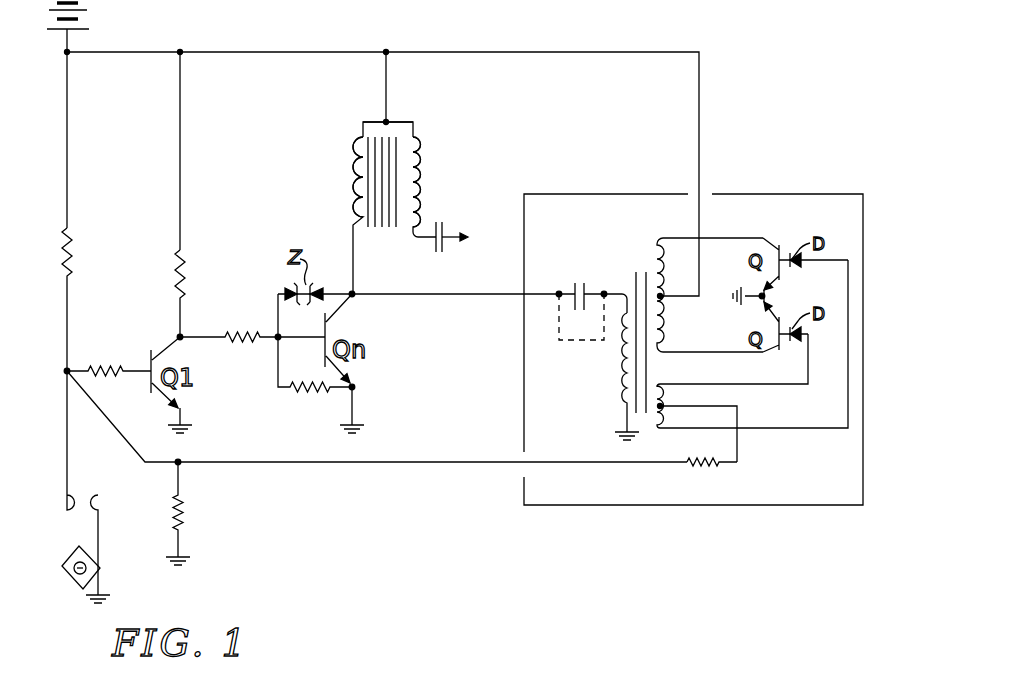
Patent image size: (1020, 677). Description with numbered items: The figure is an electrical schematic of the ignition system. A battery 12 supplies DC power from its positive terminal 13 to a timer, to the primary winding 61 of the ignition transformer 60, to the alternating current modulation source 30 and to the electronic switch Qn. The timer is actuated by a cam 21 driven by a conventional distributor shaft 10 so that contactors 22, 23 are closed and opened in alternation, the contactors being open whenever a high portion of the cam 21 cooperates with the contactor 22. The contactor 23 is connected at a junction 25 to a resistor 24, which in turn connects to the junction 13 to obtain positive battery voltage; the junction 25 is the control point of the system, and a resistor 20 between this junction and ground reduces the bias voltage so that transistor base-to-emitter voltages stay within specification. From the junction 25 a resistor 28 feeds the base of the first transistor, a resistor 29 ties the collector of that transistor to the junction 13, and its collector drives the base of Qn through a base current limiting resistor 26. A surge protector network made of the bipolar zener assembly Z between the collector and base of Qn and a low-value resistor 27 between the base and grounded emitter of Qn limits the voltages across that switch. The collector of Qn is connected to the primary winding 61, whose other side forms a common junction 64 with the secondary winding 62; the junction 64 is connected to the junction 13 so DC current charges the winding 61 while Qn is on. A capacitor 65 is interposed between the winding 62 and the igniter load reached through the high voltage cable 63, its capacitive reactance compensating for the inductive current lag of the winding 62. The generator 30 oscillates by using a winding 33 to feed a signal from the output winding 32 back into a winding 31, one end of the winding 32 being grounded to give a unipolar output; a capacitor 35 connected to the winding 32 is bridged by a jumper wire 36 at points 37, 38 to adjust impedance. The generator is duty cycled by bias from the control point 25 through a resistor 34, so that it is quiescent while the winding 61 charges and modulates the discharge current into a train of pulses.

The distributor shaft 10 is at (72, 578).
The battery 12 is at (84, 15).
The positive terminal 13 is at (64, 54).
The resistor 20 is at (179, 507).
The cam 21 is at (70, 549).
The contactor 22 is at (100, 531).
The contactor 23 is at (68, 462).
The resistor 24 is at (70, 258).
The junction 25 is at (65, 373).
The base current limiting resistor 26 is at (249, 338).
The resistor 27 is at (316, 389).
The resistor 28 is at (125, 370).
The resistor 29 is at (183, 255).
The alternating current modulation source 30 is at (627, 506).
The winding 31 is at (665, 316).
The output winding 32 is at (621, 381).
The winding 33 is at (664, 385).
The resistor 34 is at (716, 460).
The capacitor 35 is at (596, 262).
The jumper wire 36 is at (583, 343).
The point 37 is at (605, 285).
The point 38 is at (559, 294).
The ignition transformer 60 is at (386, 231).
The primary winding 61 is at (352, 163).
The secondary winding 62 is at (418, 153).
The high voltage cable 63 is at (466, 238).
The common junction 64 is at (384, 121).
The capacitor 65 is at (432, 223).